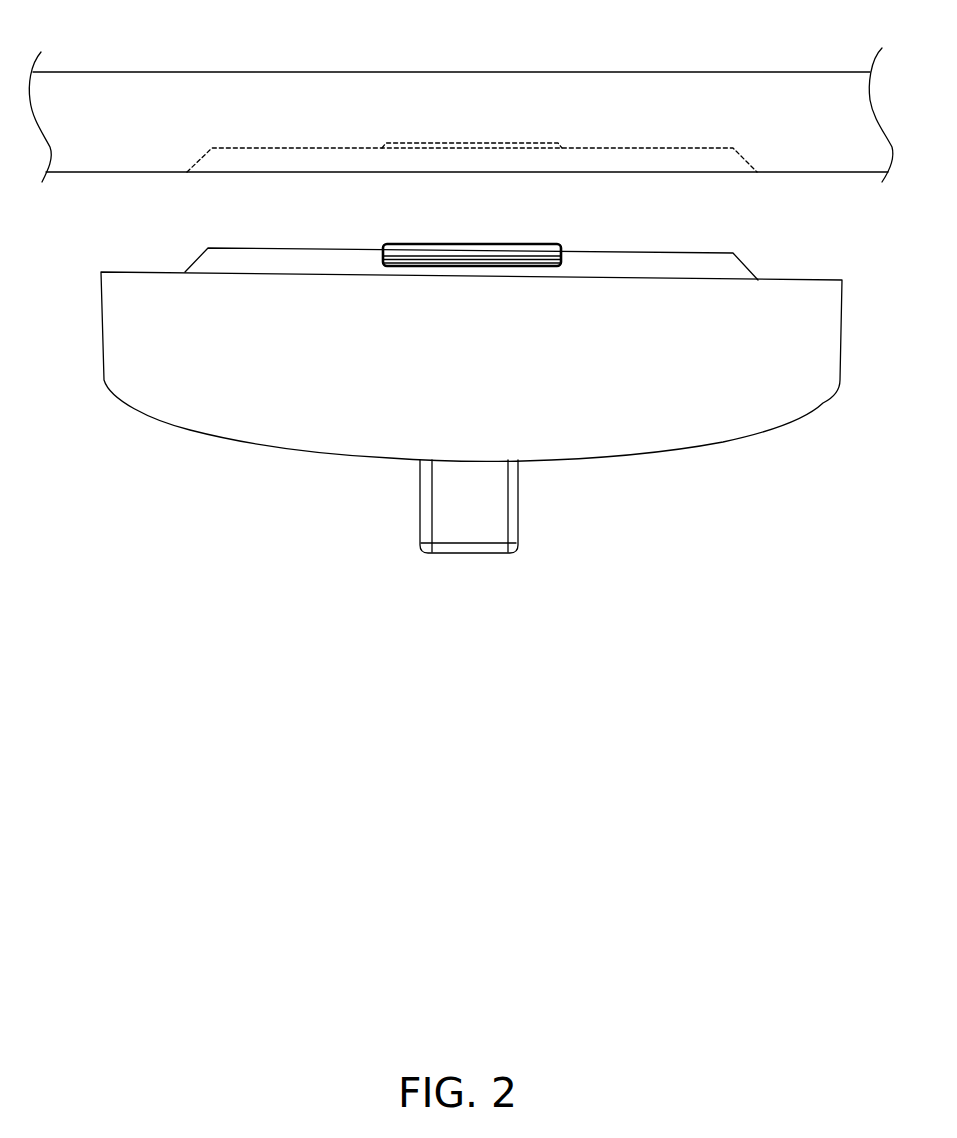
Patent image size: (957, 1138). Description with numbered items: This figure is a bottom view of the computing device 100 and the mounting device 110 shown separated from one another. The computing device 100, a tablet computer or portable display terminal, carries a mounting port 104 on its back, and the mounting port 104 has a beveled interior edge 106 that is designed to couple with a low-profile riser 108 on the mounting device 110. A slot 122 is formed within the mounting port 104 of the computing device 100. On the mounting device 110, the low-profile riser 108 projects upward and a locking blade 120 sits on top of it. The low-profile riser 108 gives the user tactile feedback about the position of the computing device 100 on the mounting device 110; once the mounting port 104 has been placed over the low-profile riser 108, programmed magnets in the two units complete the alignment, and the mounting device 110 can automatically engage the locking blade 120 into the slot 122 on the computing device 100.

The computing device 100 is at (497, 72).
The mounting port 104 is at (617, 124).
The beveled interior edge 106 is at (748, 160).
The slots 122 is at (515, 141).
The locking blade 120 is at (507, 243).
The low-profile riser 108 is at (748, 265).
The mounting device 110 is at (663, 450).